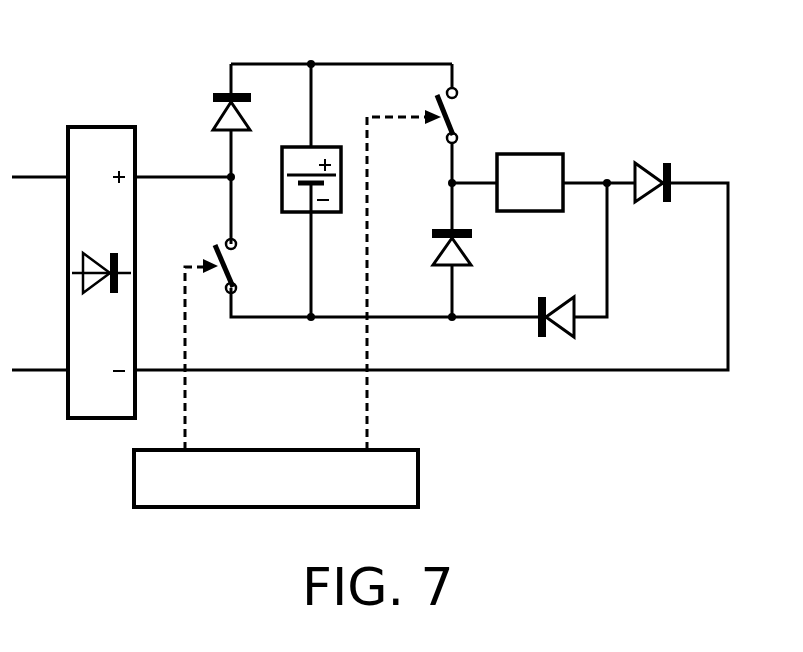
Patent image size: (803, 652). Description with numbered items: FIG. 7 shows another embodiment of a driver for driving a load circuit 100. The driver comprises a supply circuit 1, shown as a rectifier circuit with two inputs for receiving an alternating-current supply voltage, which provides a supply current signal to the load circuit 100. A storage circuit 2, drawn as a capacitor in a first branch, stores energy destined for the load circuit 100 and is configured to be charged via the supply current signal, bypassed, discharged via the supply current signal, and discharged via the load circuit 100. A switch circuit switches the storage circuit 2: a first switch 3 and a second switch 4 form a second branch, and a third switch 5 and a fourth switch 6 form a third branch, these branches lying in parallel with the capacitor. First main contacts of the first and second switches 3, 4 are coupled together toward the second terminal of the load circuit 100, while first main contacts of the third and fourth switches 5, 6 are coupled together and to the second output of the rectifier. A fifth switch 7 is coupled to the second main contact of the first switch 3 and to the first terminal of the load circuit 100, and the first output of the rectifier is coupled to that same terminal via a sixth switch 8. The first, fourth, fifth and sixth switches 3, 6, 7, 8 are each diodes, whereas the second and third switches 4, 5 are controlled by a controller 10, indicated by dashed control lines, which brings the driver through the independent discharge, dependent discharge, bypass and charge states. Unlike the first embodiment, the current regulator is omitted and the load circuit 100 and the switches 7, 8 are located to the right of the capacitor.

The supply circuit 1 is at (100, 127).
The storage circuit 2 is at (328, 147).
The first switch 3 is at (433, 252).
The second switch 4 is at (456, 112).
The third switch 5 is at (236, 262).
The fourth switch 6 is at (215, 113).
The fifth switch 7 is at (578, 328).
The sixth switch 8 is at (650, 204).
The controller 10 is at (418, 478).
The load circuit 100 is at (529, 212).